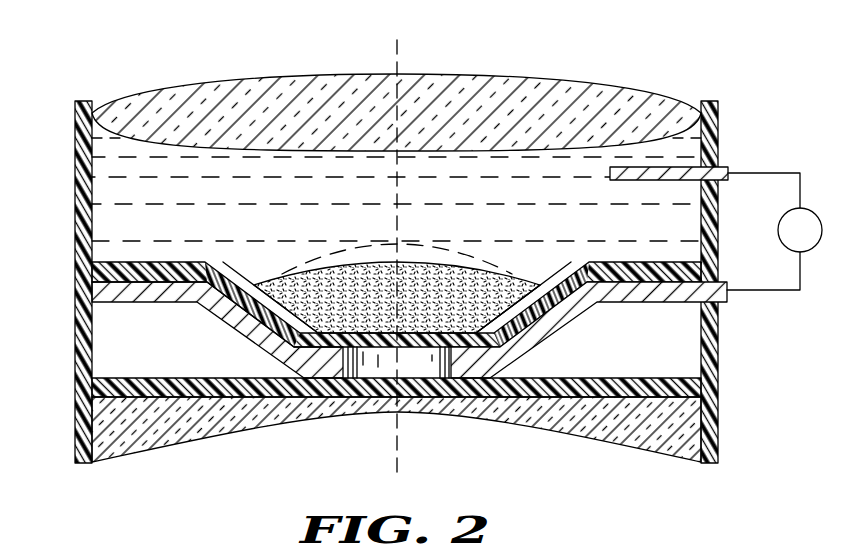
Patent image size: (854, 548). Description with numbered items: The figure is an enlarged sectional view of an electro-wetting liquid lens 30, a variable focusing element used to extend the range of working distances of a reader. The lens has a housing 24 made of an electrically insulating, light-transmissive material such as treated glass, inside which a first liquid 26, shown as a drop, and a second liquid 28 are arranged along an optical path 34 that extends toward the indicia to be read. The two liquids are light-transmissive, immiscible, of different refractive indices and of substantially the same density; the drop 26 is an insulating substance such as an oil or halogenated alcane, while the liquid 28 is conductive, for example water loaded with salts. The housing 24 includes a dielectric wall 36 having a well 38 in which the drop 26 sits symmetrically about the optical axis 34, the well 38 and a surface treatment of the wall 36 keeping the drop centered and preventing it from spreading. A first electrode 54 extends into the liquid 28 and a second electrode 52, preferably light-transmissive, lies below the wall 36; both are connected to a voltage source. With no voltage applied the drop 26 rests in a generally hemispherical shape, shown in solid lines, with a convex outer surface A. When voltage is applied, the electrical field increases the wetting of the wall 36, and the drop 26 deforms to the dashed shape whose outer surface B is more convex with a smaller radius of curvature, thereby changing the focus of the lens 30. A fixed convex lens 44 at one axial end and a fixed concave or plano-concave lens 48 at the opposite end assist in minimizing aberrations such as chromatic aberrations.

The electro-wetting liquid lens 30 is at (418, 255).
The housing 24 is at (75, 138).
The second liquid 28 is at (110, 180).
The dielectric wall 36 is at (90, 260).
The well 38 is at (232, 264).
The first liquid 26 is at (300, 288).
The fixed convex lens 44 is at (575, 77).
The first electrode 54 is at (727, 165).
The second electrode 52 is at (639, 288).
The fixed concave lens 48 is at (592, 410).
The optical path 34 is at (394, 413).
The outer surface of the drop in rest state A is at (502, 277).
The outer surface of the deformed drop B is at (437, 249).